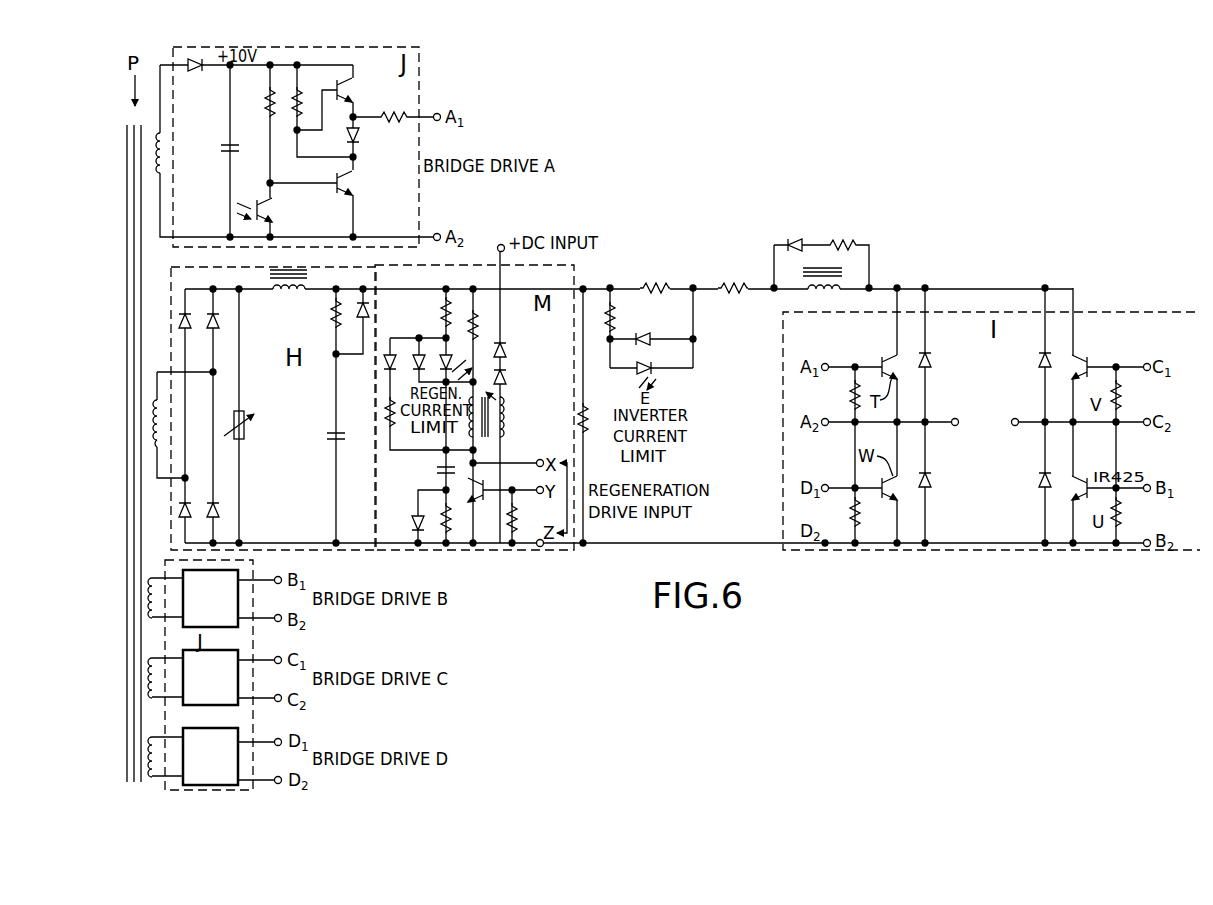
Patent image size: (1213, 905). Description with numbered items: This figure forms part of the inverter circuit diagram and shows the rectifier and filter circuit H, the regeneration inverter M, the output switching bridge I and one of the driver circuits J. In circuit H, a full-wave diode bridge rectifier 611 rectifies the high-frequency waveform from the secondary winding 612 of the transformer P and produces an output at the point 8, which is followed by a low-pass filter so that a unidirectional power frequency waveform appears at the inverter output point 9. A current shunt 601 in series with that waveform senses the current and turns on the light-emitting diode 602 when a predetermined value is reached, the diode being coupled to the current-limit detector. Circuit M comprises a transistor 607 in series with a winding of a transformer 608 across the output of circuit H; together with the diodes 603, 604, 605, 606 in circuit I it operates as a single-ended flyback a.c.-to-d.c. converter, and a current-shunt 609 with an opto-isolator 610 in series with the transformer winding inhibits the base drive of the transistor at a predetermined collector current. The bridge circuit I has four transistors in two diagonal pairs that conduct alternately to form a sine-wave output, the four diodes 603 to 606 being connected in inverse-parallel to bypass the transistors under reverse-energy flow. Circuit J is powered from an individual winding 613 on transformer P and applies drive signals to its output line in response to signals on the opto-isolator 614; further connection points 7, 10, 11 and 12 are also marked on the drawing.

The transformer secondary winding 7 is at (157, 355).
The point 8 is at (230, 278).
The inverter output point 9 is at (395, 277).
The bridge drive output connection 10 is at (350, 334).
The bridge drive output connection 11 is at (267, 686).
The inverter midpoint connection 12 is at (940, 410).
The current shunt 601 is at (657, 265).
The light-emitting diode 602 is at (658, 372).
The diode 603 is at (940, 358).
The diode 604 is at (932, 483).
The diode 605 is at (1038, 360).
The diode 606 is at (1042, 476).
The transistor 607 is at (481, 518).
The transformer 608 is at (498, 394).
The current-shunt 609 is at (476, 328).
The opto-isolator 610 is at (446, 357).
The full-wave diode bridge rectifier 611 is at (200, 410).
The secondary winding 612 is at (156, 452).
The winding 613 is at (170, 152).
The opto-isolator 614 is at (266, 210).